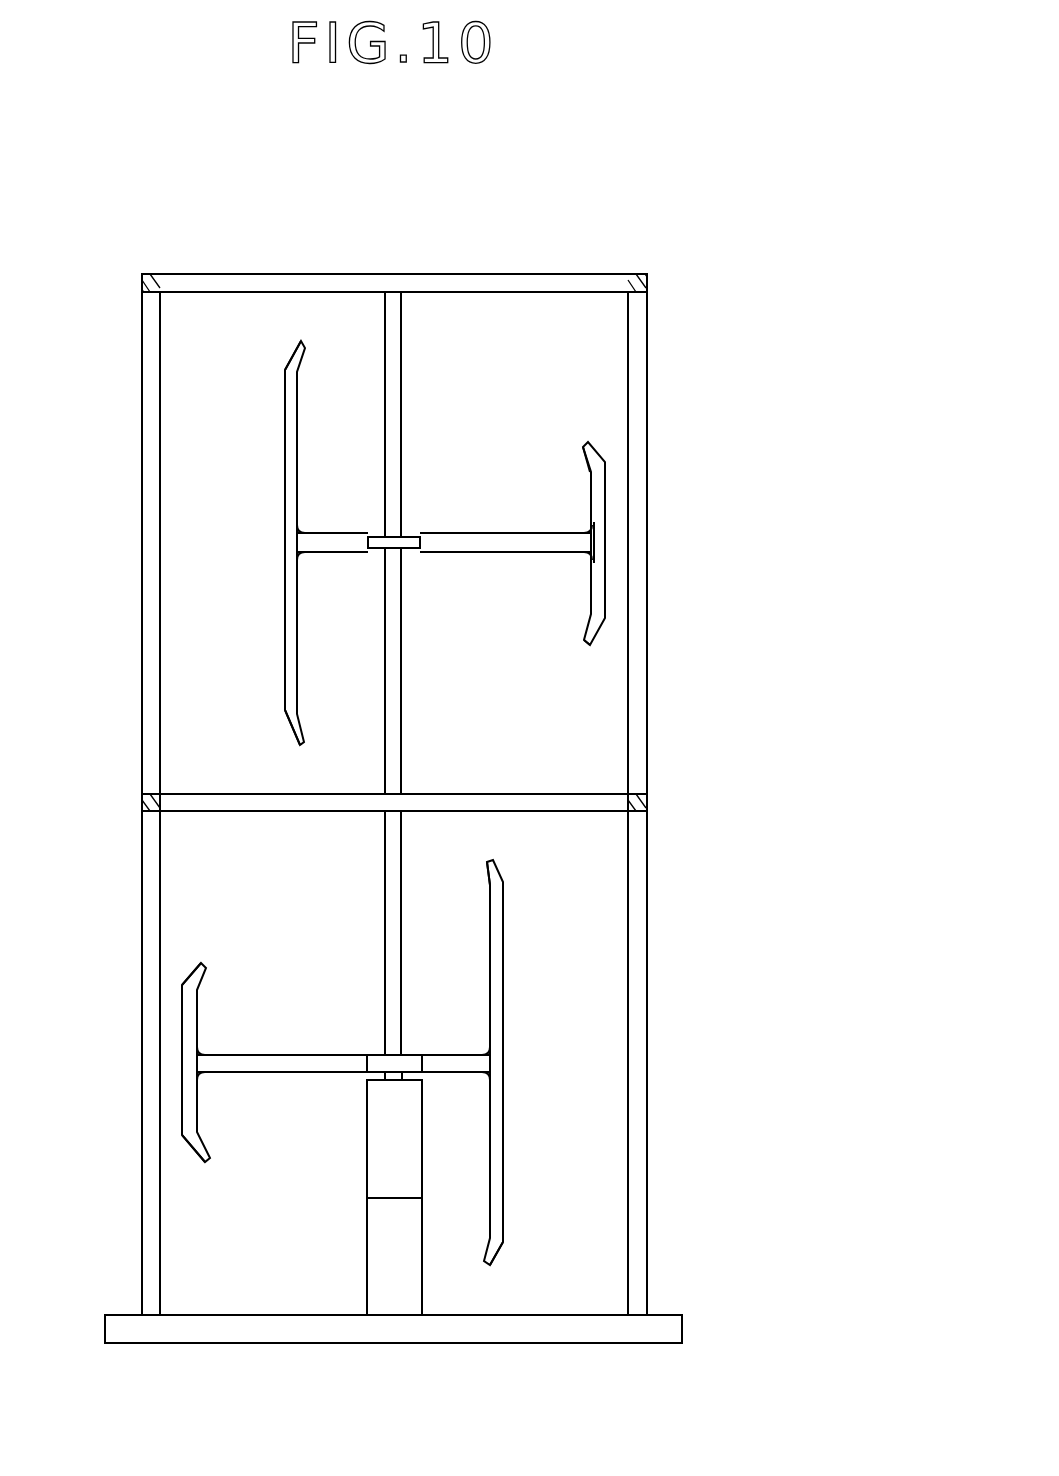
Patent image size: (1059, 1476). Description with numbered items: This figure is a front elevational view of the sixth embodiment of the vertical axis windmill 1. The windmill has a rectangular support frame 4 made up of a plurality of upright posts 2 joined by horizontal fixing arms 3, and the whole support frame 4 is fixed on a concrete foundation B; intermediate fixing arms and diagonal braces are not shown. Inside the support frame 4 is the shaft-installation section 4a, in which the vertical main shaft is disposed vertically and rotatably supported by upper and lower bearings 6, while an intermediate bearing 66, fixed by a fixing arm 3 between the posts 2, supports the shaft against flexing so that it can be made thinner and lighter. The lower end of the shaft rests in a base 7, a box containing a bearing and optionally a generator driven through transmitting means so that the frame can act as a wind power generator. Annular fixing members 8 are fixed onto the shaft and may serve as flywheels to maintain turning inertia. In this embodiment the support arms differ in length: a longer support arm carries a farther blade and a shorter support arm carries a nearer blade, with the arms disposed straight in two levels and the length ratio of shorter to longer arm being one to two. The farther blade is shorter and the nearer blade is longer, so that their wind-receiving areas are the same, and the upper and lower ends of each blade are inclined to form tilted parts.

The vertical axis windmill 1 is at (393, 724).
The post 2 is at (141, 470).
The fixing arm 3 is at (258, 274).
The support frame 4 is at (404, 1063).
The shaft-installation section 4a is at (203, 1300).
The bearing 6 is at (380, 300).
The intermediate bearing 66 is at (383, 815).
The base 7 is at (407, 1163).
The fixing member 8 is at (413, 552).
The concrete foundation B is at (665, 1315).